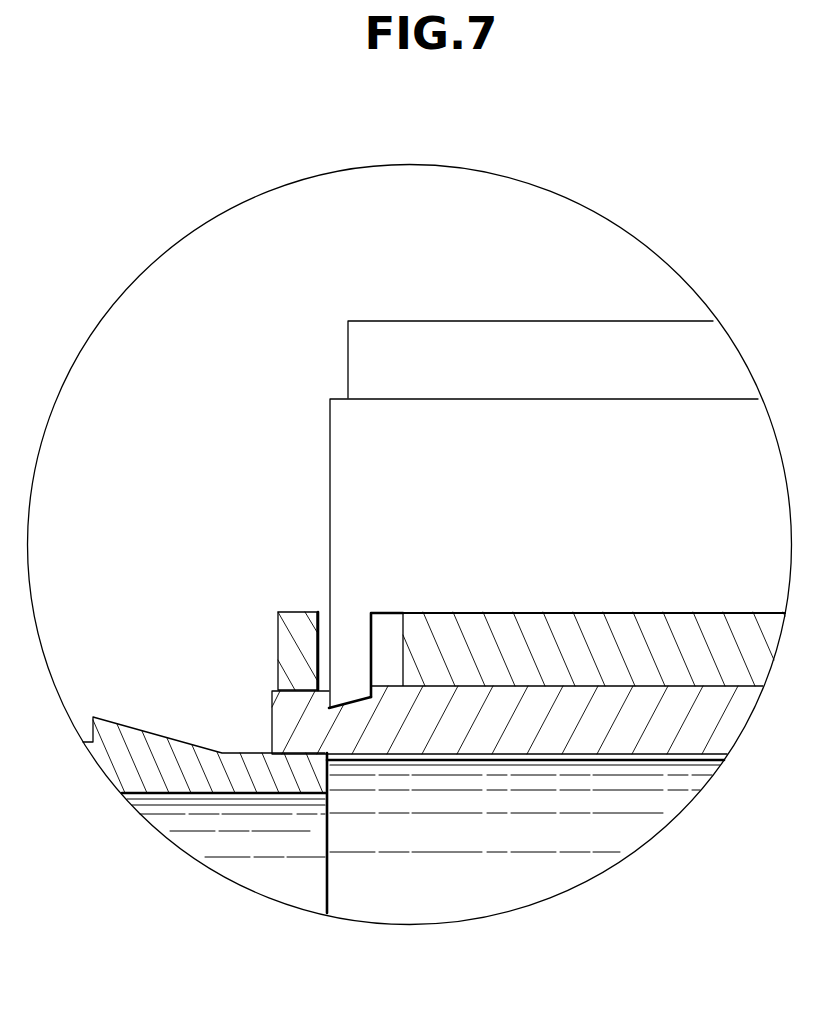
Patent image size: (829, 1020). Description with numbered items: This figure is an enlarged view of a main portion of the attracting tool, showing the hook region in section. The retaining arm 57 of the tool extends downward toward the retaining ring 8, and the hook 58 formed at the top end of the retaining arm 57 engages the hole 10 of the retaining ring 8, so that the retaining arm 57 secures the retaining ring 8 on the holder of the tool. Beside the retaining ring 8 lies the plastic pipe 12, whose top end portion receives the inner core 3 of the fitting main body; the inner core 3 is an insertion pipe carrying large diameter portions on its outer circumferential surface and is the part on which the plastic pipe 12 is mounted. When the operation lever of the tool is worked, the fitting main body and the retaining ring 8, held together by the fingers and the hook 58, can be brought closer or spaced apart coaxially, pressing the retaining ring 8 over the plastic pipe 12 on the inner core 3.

The inner core 3 is at (180, 755).
The retaining ring 8 is at (295, 613).
The hole 10 is at (318, 642).
The plastic pipe 12 is at (703, 723).
The retaining arm 57 is at (375, 462).
The hook 58 is at (345, 675).